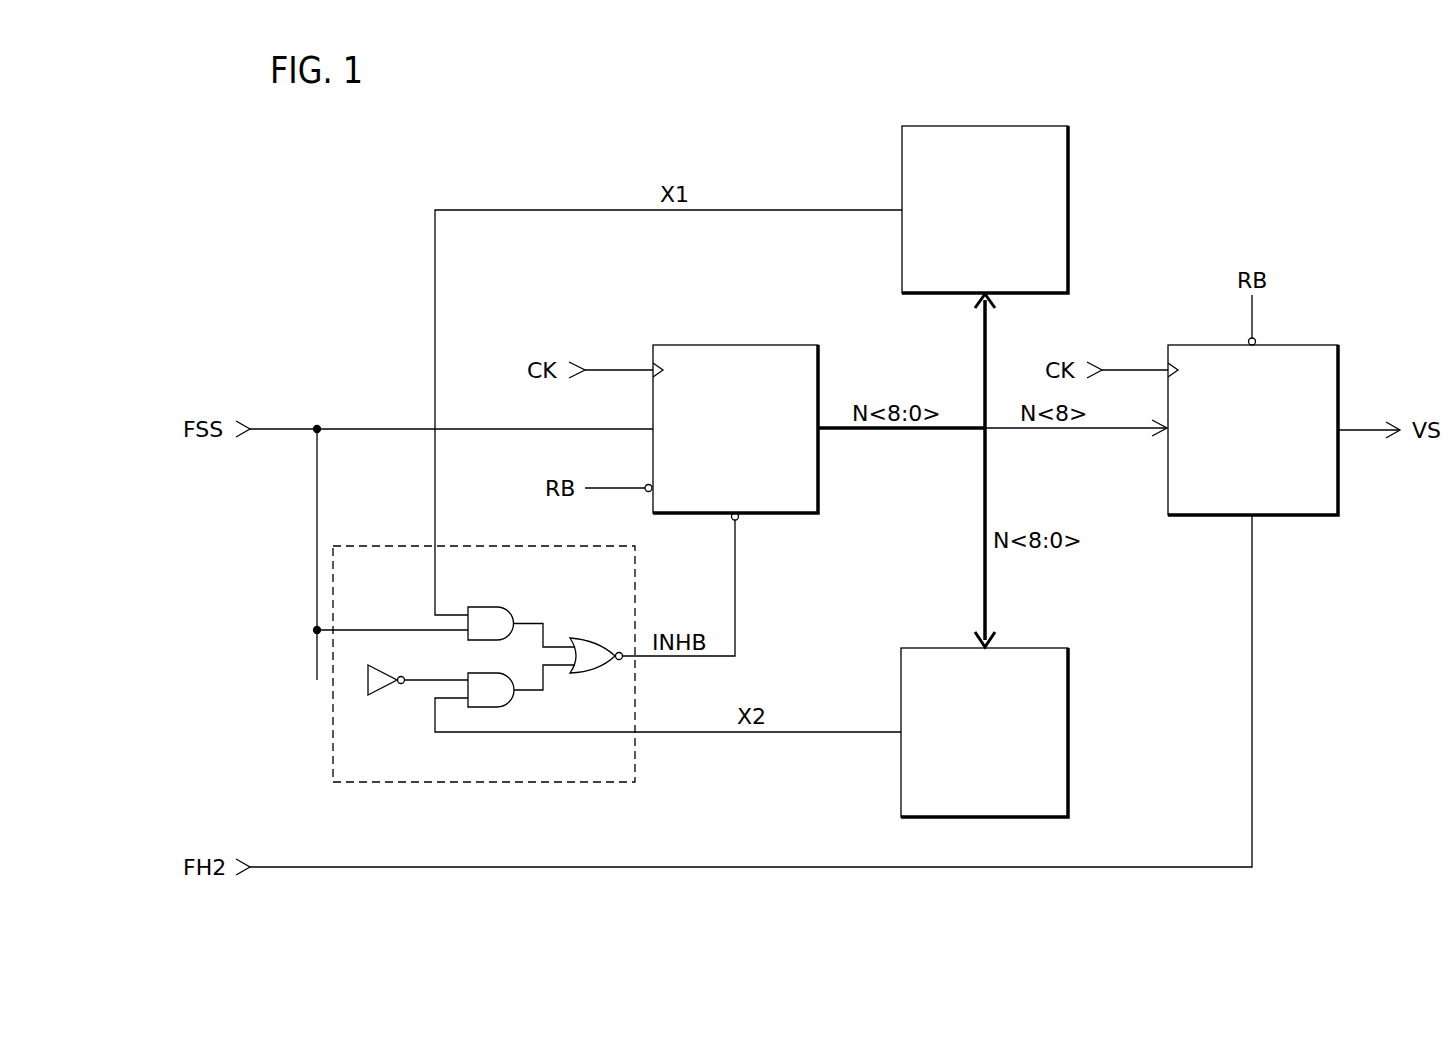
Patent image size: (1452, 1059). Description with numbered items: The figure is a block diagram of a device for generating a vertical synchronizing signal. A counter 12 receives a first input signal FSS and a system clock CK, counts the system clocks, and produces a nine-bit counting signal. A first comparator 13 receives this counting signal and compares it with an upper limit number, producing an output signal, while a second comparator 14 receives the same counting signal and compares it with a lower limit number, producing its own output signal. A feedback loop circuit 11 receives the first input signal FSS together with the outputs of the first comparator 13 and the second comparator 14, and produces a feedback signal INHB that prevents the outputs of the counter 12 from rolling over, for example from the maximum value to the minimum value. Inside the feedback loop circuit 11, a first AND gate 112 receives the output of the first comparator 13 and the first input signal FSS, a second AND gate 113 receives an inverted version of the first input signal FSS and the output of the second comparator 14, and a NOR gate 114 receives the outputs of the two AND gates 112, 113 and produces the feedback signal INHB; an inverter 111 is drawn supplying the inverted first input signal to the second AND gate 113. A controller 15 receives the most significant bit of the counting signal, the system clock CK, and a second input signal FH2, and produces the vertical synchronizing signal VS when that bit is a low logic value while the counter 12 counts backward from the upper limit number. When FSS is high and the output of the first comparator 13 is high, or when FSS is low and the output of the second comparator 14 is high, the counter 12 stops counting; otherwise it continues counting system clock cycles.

The feedback loop circuit 11 is at (487, 546).
The counter 12 is at (737, 345).
The first comparator 13 is at (1070, 212).
The second comparator 14 is at (1070, 735).
The controller 15 is at (1340, 378).
The inverter 111 is at (377, 698).
The first AND gate 112 is at (487, 607).
The second AND gate 113 is at (487, 708).
The NOR gate 114 is at (586, 640).